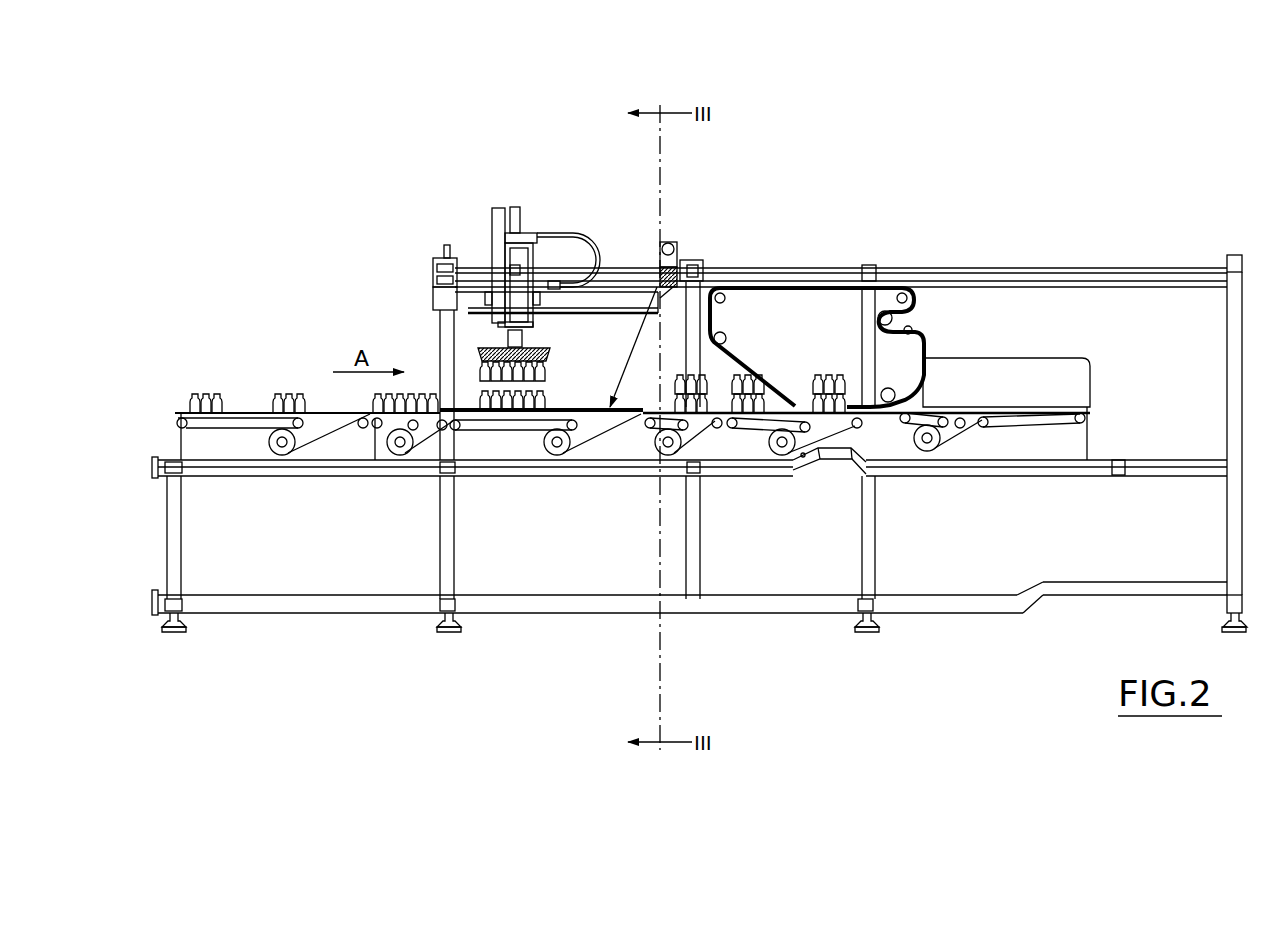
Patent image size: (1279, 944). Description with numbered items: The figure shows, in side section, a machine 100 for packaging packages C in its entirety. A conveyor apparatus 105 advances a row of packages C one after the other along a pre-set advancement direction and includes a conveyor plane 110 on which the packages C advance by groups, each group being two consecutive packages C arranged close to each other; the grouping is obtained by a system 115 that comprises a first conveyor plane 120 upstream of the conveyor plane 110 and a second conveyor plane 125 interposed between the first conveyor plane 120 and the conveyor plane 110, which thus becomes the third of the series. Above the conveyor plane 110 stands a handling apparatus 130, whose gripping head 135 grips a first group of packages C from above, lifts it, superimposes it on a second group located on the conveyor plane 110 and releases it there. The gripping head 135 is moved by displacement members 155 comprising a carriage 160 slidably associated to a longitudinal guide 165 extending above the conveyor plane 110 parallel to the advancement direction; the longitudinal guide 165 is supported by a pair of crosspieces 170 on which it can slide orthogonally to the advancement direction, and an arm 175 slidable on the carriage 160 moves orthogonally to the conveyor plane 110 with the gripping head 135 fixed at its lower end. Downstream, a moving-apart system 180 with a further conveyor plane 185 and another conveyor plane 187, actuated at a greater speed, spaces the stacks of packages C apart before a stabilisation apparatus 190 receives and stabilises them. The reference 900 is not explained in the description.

The machine 100 is at (1082, 135).
The conveyor apparatus 105 is at (520, 452).
The conveyor plane 110 is at (673, 240).
The grouping system 115 is at (340, 454).
The first conveyor plane 120 is at (250, 408).
The second conveyor plane 125 is at (397, 452).
The handling apparatus 130 is at (481, 173).
The gripping head 135 is at (492, 347).
The displacement members 155 is at (561, 207).
The carriage 160 is at (486, 268).
The longitudinal guide 165 is at (605, 268).
The crosspieces 170 is at (433, 262).
The arm 175 is at (514, 305).
The moving-apart system 180 is at (734, 455).
The further conveyor plane 185 is at (701, 445).
The another conveyor plane 187 is at (795, 402).
The stabilisation apparatus 190 is at (1024, 378).
The bottles 900 is at (192, 396).
The packages C is at (284, 395).